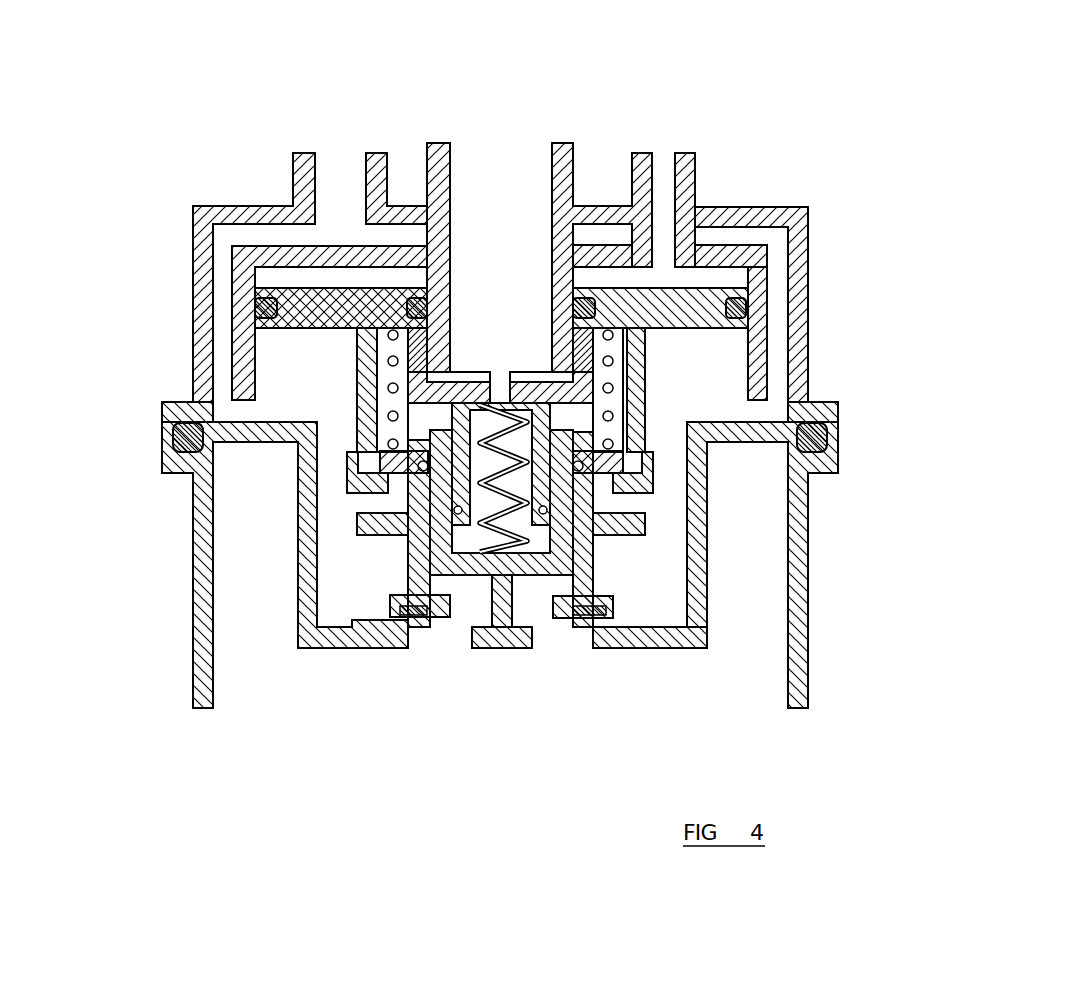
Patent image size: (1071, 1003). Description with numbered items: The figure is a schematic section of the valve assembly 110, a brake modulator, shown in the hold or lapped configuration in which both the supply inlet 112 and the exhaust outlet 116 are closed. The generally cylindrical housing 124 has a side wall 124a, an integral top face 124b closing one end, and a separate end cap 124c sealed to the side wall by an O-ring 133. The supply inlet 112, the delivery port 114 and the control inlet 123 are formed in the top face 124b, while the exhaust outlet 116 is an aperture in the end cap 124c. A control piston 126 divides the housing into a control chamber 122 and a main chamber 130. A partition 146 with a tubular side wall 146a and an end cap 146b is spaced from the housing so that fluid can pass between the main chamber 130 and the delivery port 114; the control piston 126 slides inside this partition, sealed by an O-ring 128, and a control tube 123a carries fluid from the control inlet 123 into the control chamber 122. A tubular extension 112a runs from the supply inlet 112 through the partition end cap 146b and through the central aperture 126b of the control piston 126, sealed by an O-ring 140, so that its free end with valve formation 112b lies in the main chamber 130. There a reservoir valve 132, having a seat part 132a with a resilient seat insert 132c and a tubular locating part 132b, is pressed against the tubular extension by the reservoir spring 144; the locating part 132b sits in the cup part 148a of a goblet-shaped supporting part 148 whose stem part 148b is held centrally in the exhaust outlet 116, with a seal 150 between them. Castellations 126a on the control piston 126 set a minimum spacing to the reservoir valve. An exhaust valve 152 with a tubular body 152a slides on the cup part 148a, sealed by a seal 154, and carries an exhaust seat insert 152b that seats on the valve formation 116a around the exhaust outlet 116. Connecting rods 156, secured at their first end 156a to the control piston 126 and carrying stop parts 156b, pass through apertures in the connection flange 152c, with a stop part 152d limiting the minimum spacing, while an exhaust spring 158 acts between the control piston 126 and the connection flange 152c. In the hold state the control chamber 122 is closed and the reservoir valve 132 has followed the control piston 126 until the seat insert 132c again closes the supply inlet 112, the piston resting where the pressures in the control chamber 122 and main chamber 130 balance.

The valve assembly 110 is at (823, 260).
The supply inlet 112 is at (450, 182).
The tubular extension 112a is at (451, 330).
The valve formation 112b is at (461, 362).
The delivery port 114 is at (317, 195).
The exhaust outlet 116 is at (410, 634).
The valve formation 116a is at (375, 622).
The control chamber 122 is at (303, 276).
The control inlet 123 is at (662, 175).
The control tube 123a is at (690, 250).
The housing 124 is at (185, 345).
The side wall 124a is at (193, 273).
The top face 124b is at (222, 203).
The end cap 124c is at (715, 625).
The control piston 126 is at (725, 200).
The castellations 126a is at (757, 260).
The central aperture 126b is at (552, 311).
The O-ring 128 is at (778, 238).
The main chamber 130 is at (290, 385).
The reservoir valve 132 is at (740, 355).
The seat part 132a is at (609, 395).
The locating part 132b is at (640, 440).
The seat insert 132c is at (655, 313).
The O-ring 133 is at (830, 437).
The O-ring 140 is at (552, 298).
The reservoir spring 144 is at (608, 567).
The partition 146 is at (224, 305).
The side wall 146a is at (240, 332).
The end cap 146b is at (277, 245).
The supporting part 148 is at (532, 590).
The cup part 148a is at (635, 512).
The stem part 148b is at (470, 638).
The seal 150 is at (548, 520).
The exhaust valve 152 is at (800, 592).
The tubular body 152a is at (395, 608).
The exhaust seat insert 152b is at (585, 618).
The connection flange 152c is at (650, 462).
The stop part 152d is at (348, 487).
The seal 154 is at (365, 520).
The connecting rods 156 is at (355, 405).
The first end 156a is at (360, 352).
The stop part 156b is at (377, 462).
The exhaust spring 158 is at (612, 420).